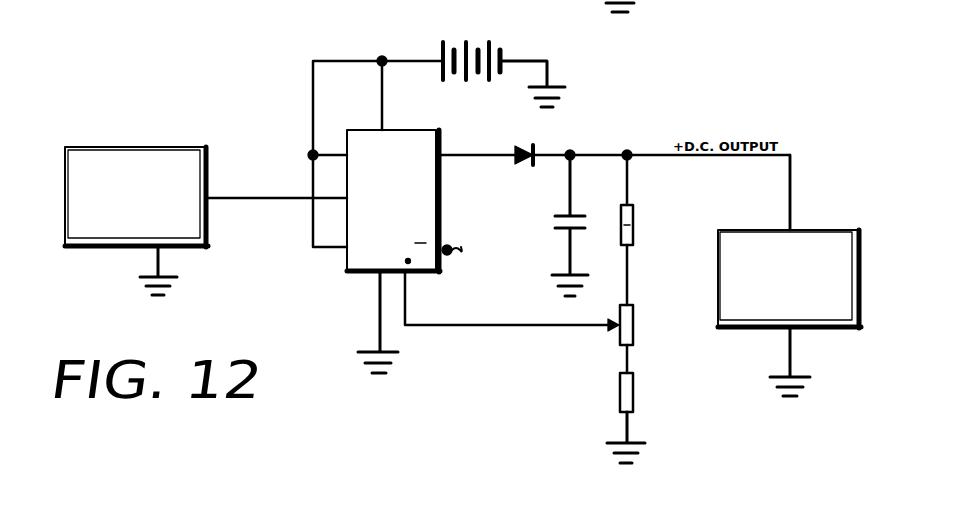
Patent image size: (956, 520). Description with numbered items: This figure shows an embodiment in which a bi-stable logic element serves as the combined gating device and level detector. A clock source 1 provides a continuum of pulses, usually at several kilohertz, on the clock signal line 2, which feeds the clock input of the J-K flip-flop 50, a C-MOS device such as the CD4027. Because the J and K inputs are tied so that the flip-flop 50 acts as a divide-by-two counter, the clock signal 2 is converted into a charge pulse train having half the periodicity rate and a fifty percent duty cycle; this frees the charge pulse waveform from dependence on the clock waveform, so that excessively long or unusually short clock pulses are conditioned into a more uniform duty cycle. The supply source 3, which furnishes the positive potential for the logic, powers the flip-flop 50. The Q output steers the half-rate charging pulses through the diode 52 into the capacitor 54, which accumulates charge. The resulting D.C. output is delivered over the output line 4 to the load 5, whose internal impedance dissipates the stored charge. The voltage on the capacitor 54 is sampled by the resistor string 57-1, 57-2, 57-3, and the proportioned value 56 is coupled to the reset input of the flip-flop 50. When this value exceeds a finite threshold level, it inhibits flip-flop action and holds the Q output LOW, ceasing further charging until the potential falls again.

The clock source 1 is at (163, 163).
The clock signal line 2 is at (253, 196).
The source 3 is at (491, 50).
The DC output line 4 is at (794, 180).
The load 5 is at (840, 246).
The J-K flip-flop 50 is at (414, 148).
The diode 52 is at (536, 153).
The capacitor 54 is at (559, 223).
The reset value 56 is at (540, 329).
The resistor 57-1 is at (631, 313).
The resistor 57-2 is at (630, 388).
The resistor 57-3 is at (633, 226).